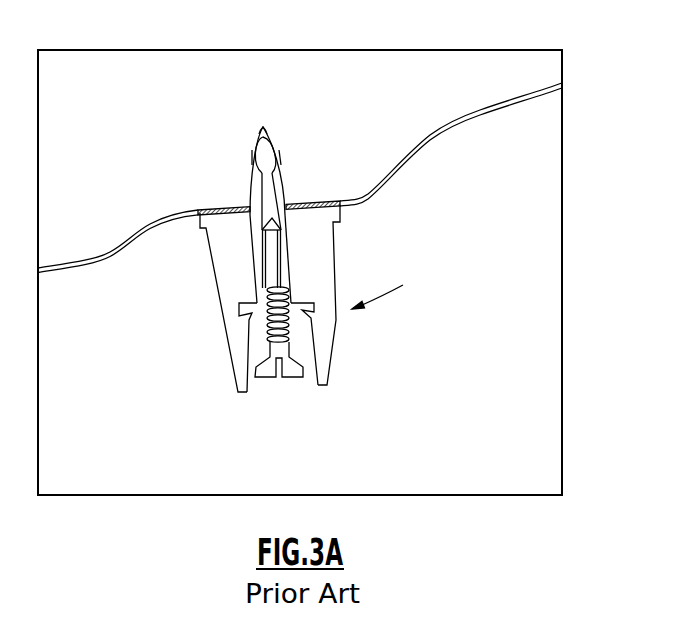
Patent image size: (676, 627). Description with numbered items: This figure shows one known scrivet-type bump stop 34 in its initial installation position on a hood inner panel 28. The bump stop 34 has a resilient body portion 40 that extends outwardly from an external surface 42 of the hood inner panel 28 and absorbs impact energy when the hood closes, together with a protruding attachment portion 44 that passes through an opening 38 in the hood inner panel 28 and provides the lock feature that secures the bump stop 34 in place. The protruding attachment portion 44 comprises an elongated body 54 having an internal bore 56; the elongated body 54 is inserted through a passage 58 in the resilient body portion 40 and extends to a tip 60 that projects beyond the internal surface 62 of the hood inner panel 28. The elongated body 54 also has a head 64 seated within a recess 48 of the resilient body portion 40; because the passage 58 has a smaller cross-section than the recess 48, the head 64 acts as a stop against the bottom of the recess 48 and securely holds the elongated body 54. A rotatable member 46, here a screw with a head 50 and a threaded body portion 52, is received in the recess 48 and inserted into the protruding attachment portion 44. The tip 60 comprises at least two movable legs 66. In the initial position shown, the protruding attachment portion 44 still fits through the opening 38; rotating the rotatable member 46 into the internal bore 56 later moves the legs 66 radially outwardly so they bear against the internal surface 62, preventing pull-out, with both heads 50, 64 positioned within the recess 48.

The hood inner panel 28 is at (77, 268).
The bump stop 34 is at (391, 290).
The opening 38 is at (197, 211).
The resilient body portion 40 is at (330, 352).
The external surface 42 is at (346, 207).
The protruding attachment portion 44 is at (287, 183).
The rotatable member 46 is at (267, 338).
The recess 48 is at (302, 338).
The head 50 is at (267, 380).
The threaded body portion 52 is at (264, 318).
The elongated body 54 is at (259, 253).
The internal bore 56 is at (267, 210).
The passage 58 is at (290, 262).
The tip 60 is at (261, 126).
The internal surface 62 is at (403, 165).
The head 64 is at (245, 302).
The movable legs 66 is at (252, 157).